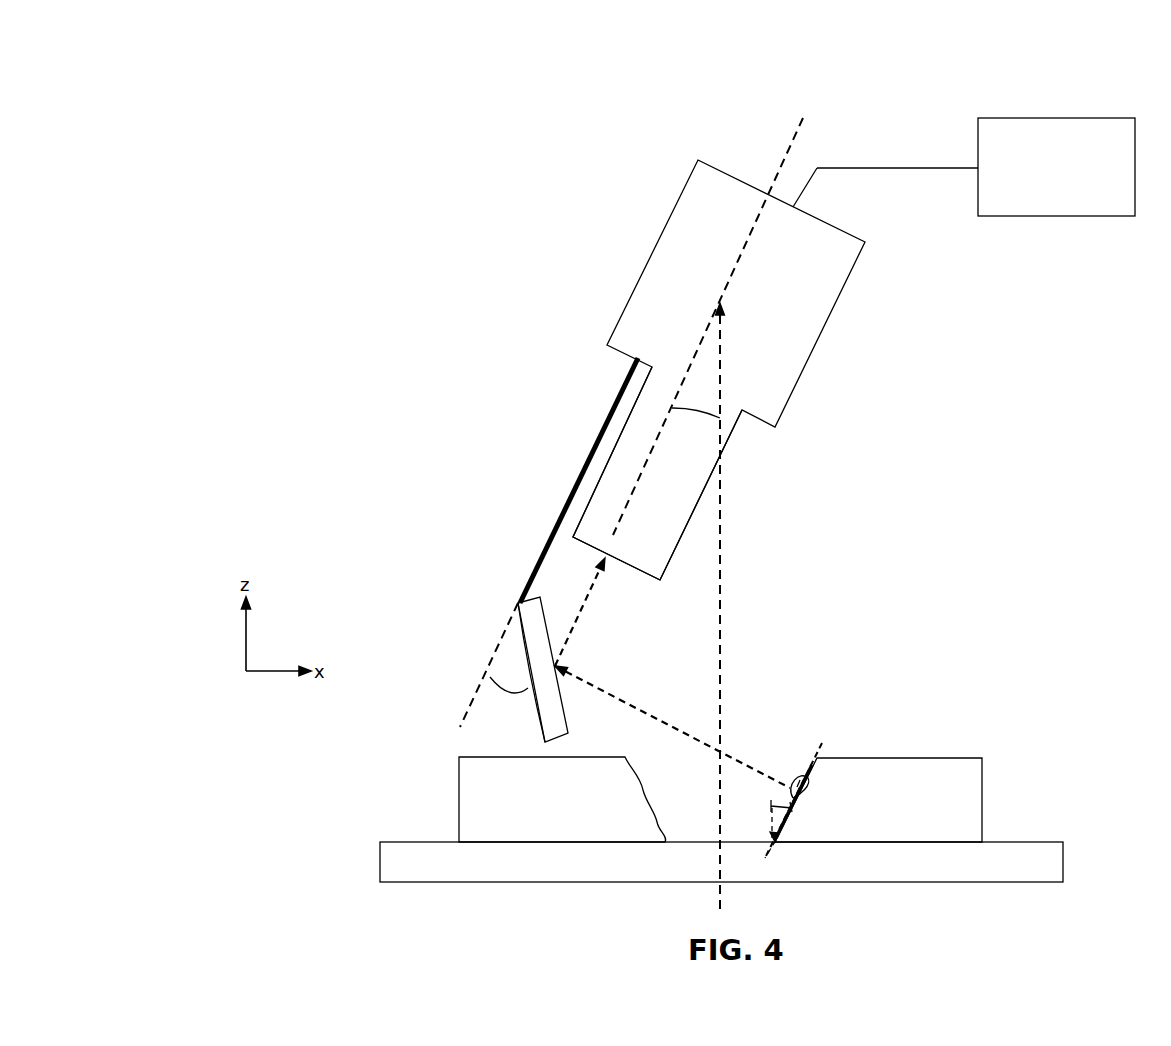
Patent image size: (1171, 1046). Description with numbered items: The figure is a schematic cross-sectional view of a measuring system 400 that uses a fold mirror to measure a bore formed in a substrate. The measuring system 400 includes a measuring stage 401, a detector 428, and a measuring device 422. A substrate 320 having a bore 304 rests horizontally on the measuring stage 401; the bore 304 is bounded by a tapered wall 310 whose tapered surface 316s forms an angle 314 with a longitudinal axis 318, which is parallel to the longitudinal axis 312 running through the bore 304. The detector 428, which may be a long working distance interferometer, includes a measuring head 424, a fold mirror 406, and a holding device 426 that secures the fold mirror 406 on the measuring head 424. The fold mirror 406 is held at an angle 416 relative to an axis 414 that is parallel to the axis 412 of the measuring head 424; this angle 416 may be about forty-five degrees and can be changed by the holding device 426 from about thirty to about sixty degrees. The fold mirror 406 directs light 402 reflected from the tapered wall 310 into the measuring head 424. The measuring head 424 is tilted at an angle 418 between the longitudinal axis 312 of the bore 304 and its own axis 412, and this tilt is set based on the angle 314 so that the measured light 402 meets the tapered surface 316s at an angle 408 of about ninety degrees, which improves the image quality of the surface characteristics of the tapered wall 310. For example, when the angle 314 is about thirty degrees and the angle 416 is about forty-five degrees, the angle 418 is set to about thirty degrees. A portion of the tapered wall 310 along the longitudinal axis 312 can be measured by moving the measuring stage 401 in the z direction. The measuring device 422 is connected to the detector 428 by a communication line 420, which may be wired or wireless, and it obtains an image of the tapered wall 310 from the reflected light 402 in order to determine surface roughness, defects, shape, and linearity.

The measuring system 400 is at (382, 280).
The measuring stage 401 is at (1053, 865).
The light 402 is at (600, 695).
The fold mirror 406 is at (528, 627).
The angle 408 is at (800, 785).
The axis of measuring head 412 is at (782, 162).
The axis 414 is at (473, 700).
The angle 416 is at (505, 693).
The angle 418 is at (693, 430).
The communication line 420 is at (896, 168).
The measuring device 422 is at (1058, 118).
The measuring head 424 is at (655, 245).
The holding device 426 is at (537, 556).
The detector 428 is at (542, 416).
The bore 304 is at (738, 792).
The tapered wall 310 is at (797, 807).
The longitudinal axis 312 is at (727, 522).
The angle 314 is at (772, 800).
The tapered surface 316s is at (775, 847).
The longitudinal axis 318 is at (772, 808).
The substrate 320 is at (926, 768).